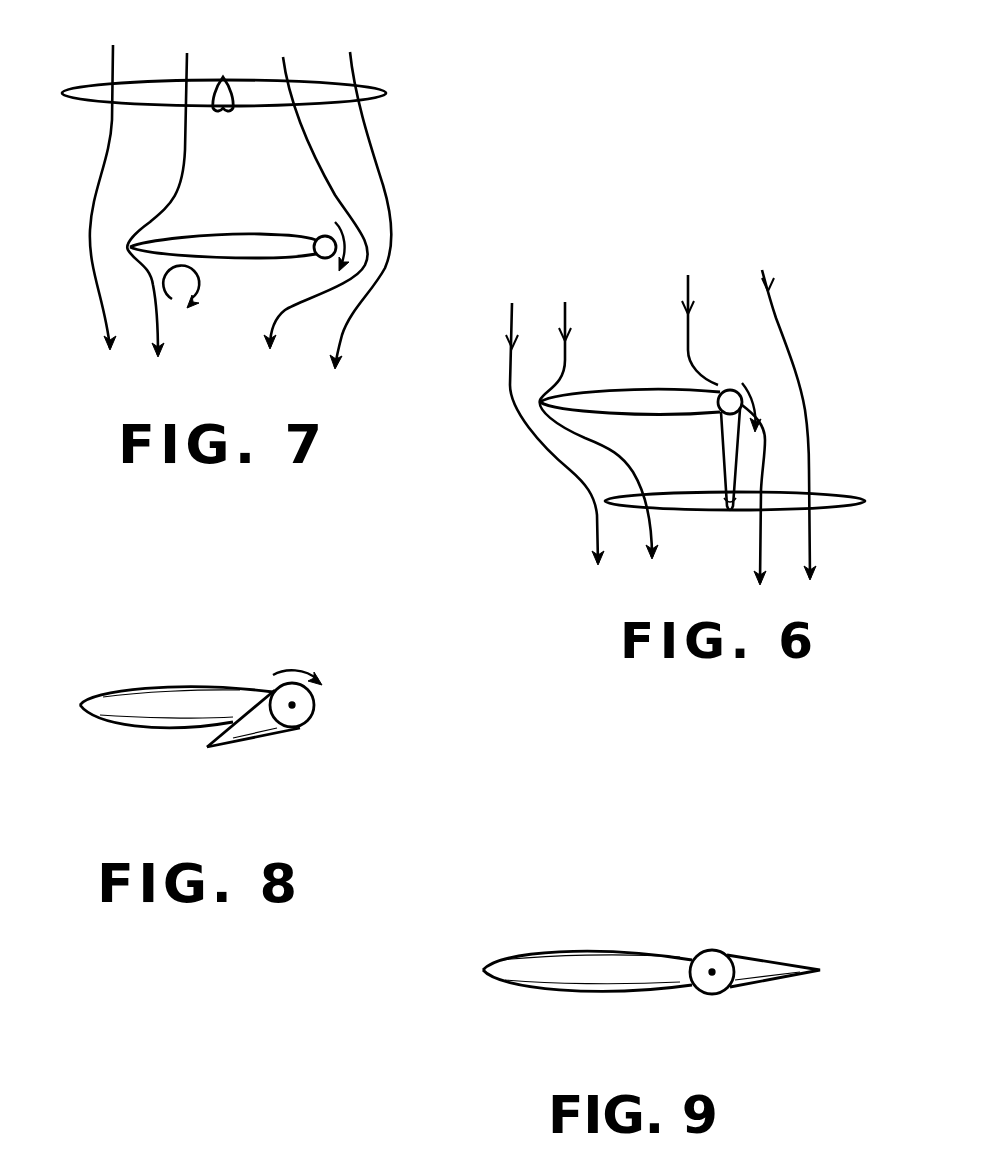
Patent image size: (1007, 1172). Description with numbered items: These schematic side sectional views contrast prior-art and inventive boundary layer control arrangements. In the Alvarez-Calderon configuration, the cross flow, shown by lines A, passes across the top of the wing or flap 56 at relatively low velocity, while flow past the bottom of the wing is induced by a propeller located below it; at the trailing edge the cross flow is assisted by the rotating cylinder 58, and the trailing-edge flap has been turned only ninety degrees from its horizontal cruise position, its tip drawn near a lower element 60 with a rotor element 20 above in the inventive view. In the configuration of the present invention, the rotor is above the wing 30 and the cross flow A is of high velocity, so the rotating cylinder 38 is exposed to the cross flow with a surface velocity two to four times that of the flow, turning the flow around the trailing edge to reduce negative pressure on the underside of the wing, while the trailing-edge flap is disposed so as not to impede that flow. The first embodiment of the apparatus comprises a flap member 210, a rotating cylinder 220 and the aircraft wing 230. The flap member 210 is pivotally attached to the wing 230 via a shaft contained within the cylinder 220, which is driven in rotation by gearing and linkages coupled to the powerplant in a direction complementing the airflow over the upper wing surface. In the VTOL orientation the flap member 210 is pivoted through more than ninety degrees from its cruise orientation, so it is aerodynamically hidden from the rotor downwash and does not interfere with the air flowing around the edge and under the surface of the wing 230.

In FIG. 7, the rotor blade / airfoil 20 is at (370, 80).
In FIG. 7, the wing 30 is at (227, 233).
In FIG. 7, the rotating cylinder 38 is at (325, 236).
In FIG. 6, the wing or flap 56 is at (650, 387).
In FIG. 6, the rotating cylinder 58 is at (732, 380).
In FIG. 6, the lower airfoil 60 is at (848, 510).
In FIG. 8, the flap member 210 is at (247, 747).
In FIG. 9, the flap member 210 is at (762, 983).
In FIG. 8, the rotating cylinder 220 is at (296, 698).
In FIG. 9, the rotating cylinder 220 is at (717, 953).
In FIG. 8, the aircraft wing 230 is at (153, 732).
In FIG. 9, the aircraft wing 230 is at (558, 950).
In FIG. 7, the air flow lines A is at (177, 177).
In FIG. 6, the air flow lines A is at (505, 395).